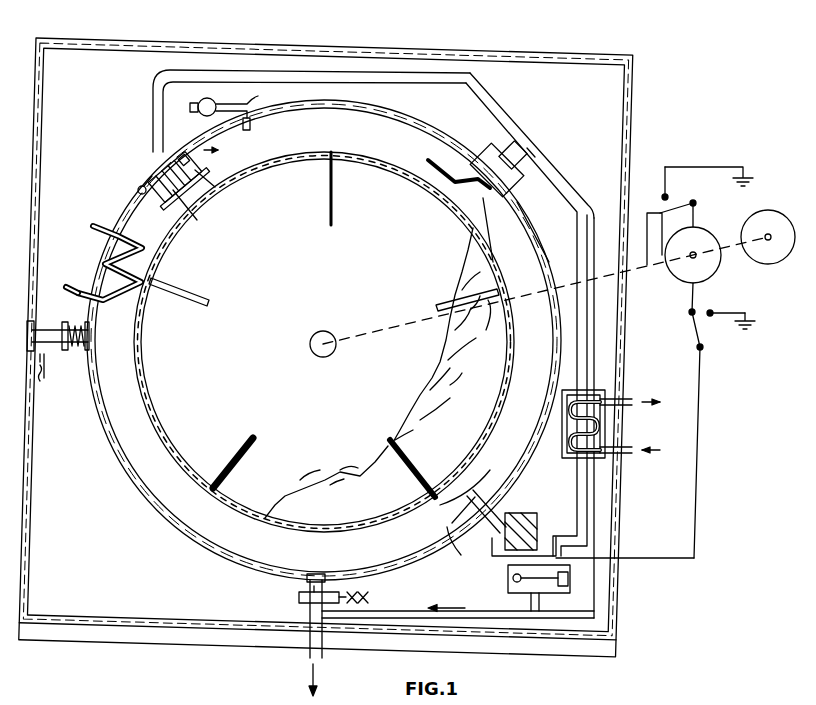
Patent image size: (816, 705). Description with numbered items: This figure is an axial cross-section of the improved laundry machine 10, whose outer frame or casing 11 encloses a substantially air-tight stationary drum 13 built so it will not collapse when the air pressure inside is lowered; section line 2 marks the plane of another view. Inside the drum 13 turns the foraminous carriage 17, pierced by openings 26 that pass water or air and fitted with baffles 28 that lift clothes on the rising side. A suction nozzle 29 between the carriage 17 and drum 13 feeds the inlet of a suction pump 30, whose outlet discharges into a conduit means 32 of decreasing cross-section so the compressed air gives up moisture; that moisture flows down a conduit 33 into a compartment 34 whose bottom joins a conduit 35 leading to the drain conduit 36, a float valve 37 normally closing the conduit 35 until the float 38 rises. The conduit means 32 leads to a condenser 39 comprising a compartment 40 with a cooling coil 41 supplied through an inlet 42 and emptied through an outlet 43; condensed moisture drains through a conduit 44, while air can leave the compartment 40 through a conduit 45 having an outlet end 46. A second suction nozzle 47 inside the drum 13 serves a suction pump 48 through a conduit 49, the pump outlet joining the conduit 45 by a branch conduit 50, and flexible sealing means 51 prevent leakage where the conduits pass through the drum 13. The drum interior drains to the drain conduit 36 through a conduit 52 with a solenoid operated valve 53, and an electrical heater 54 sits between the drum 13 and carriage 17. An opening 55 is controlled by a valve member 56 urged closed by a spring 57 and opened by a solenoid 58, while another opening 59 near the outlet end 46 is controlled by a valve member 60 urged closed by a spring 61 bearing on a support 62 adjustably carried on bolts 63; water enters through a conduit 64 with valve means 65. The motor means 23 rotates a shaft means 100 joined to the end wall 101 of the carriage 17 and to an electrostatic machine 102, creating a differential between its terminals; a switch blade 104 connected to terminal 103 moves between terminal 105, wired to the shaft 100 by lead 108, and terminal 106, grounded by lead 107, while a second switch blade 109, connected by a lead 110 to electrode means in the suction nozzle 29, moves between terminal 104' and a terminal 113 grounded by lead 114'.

The section line 2- 2 is at (333, 58).
The laundry machine 10 is at (652, 91).
The outer frame or casing 11 is at (29, 589).
The stationary drum 13 is at (160, 516).
The carriage 17 is at (172, 450).
The motor means 23 is at (772, 210).
The openings 26 is at (157, 408).
The baffles 28 is at (203, 296).
The suction nozzle 29 is at (428, 512).
The suction pump 30 is at (523, 513).
The conduit means 32 is at (544, 534).
The conduit 33 is at (600, 551).
The compartment 34 is at (508, 588).
The conduit 35 is at (382, 613).
The drain conduit 36 is at (325, 645).
The float valve 37 is at (528, 598).
The float 38 is at (512, 576).
The condenser 39 is at (601, 384).
The compartment 40 is at (562, 445).
The cooling coil 41 is at (592, 418).
The inlet 42 is at (618, 453).
The outlet 43 is at (618, 398).
The conduit 44 is at (596, 516).
The conduit 45 is at (507, 112).
The outlet end 46 is at (152, 110).
The suction nozzle 47 is at (452, 180).
The suction pump 48 is at (497, 148).
The conduit 49 is at (512, 183).
The branch conduit 50 is at (527, 148).
The flexible sealing means 51 is at (522, 224).
The conduit 52 is at (313, 576).
The solenoid operated valve 53 is at (298, 598).
The electrical heater 54 is at (138, 300).
The opening 55 is at (90, 340).
The valve member 56 is at (84, 308).
The spring 57 is at (70, 352).
The solenoid 58 is at (61, 324).
The opening 59 is at (158, 166).
The valve member 60 is at (176, 158).
The spring 61 is at (214, 186).
The support 62 is at (192, 208).
The bolts 63 is at (138, 190).
The conduit 64 is at (252, 102).
The valve means 65 is at (213, 100).
The shaft means 100 is at (329, 331).
The end wall 101 is at (369, 172).
The electrostatic machine 102 is at (688, 285).
The terminal 103 is at (697, 204).
The switch blade 104 is at (690, 198).
The terminal 104' is at (671, 310).
The terminal 105 is at (627, 271).
The terminal 106 is at (663, 194).
The lead 107 is at (730, 166).
The lead 108 is at (643, 236).
The switch blade 109 is at (702, 347).
The lead 110 is at (695, 442).
The terminal 113 is at (712, 311).
The lead 114' is at (765, 308).